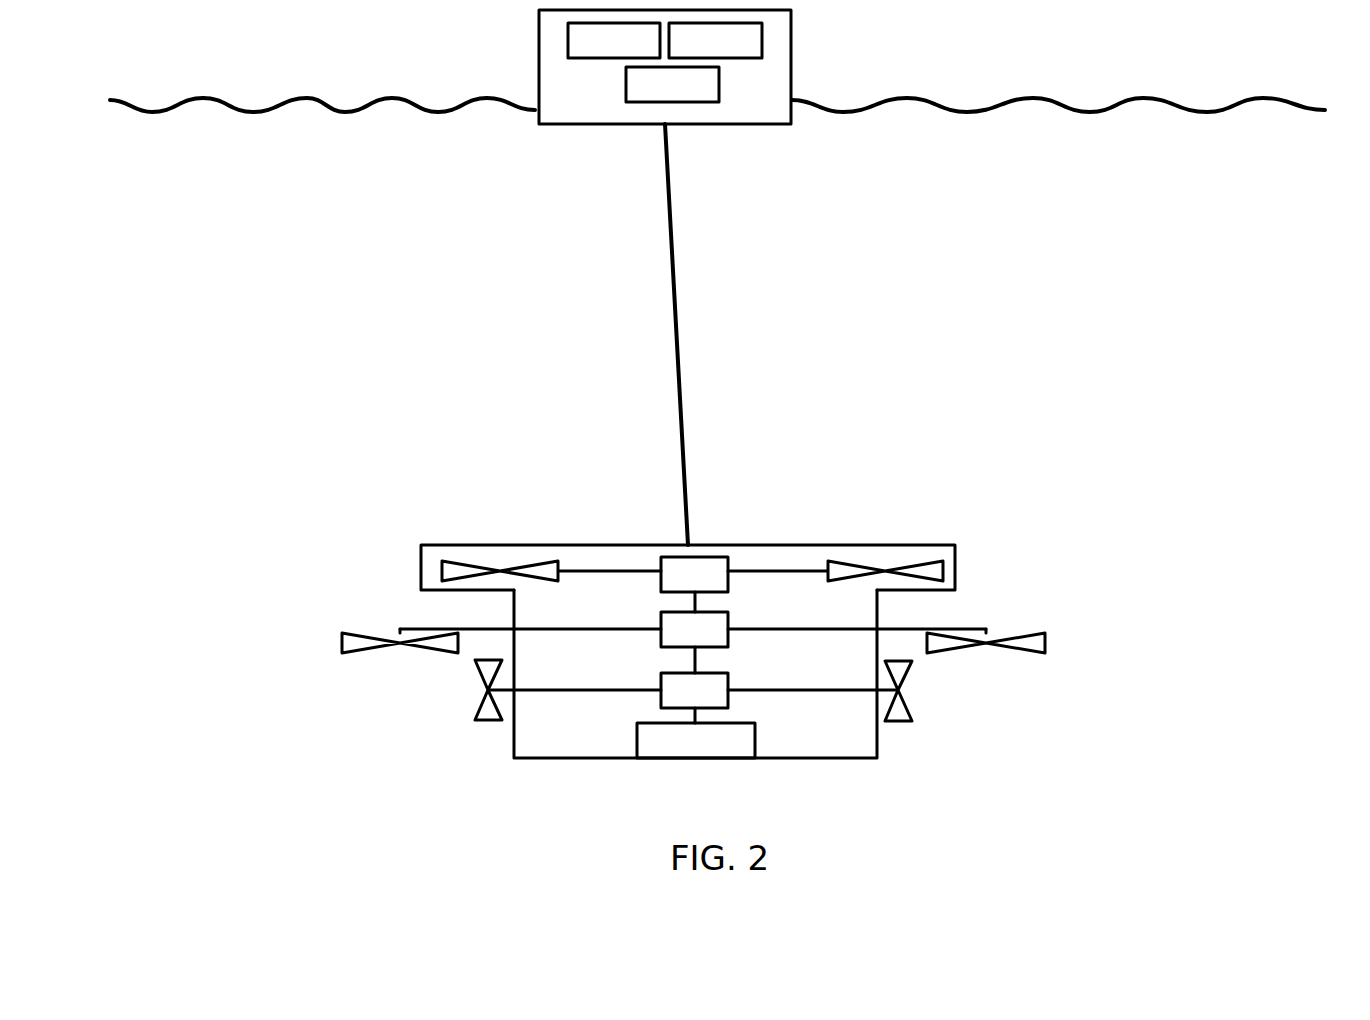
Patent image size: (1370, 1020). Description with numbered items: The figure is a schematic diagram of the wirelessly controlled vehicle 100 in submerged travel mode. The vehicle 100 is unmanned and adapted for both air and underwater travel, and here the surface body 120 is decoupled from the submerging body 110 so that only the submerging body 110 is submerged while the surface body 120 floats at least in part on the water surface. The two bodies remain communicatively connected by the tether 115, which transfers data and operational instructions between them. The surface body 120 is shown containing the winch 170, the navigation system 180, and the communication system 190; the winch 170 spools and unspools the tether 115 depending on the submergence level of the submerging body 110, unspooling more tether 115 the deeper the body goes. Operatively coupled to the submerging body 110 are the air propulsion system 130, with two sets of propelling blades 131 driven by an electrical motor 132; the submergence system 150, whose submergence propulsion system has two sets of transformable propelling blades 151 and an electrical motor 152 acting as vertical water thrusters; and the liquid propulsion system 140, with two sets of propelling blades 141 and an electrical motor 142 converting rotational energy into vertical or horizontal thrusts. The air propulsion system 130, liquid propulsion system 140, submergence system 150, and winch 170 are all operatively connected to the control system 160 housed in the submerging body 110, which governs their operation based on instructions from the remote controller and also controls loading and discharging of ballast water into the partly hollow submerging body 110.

The wirelessly controlled vehicle 100 is at (176, 828).
The submerging body 110 is at (897, 788).
The tether 115 is at (652, 258).
The surface body 120 is at (791, 147).
The air propulsion system 130 is at (375, 569).
The propelling blades 131 is at (692, 584).
The electrical motor 132 is at (694, 584).
The liquid propulsion system 140 is at (376, 725).
The propelling blades 141 is at (698, 691).
The electrical motor 142 is at (694, 698).
The submergence system 150 is at (299, 650).
The propelling blades 151 is at (724, 655).
The electrical motor 152 is at (694, 642).
The control system 160 is at (696, 740).
The winch 170 is at (614, 40).
The navigation system 180 is at (715, 40).
The communication system 190 is at (672, 84).